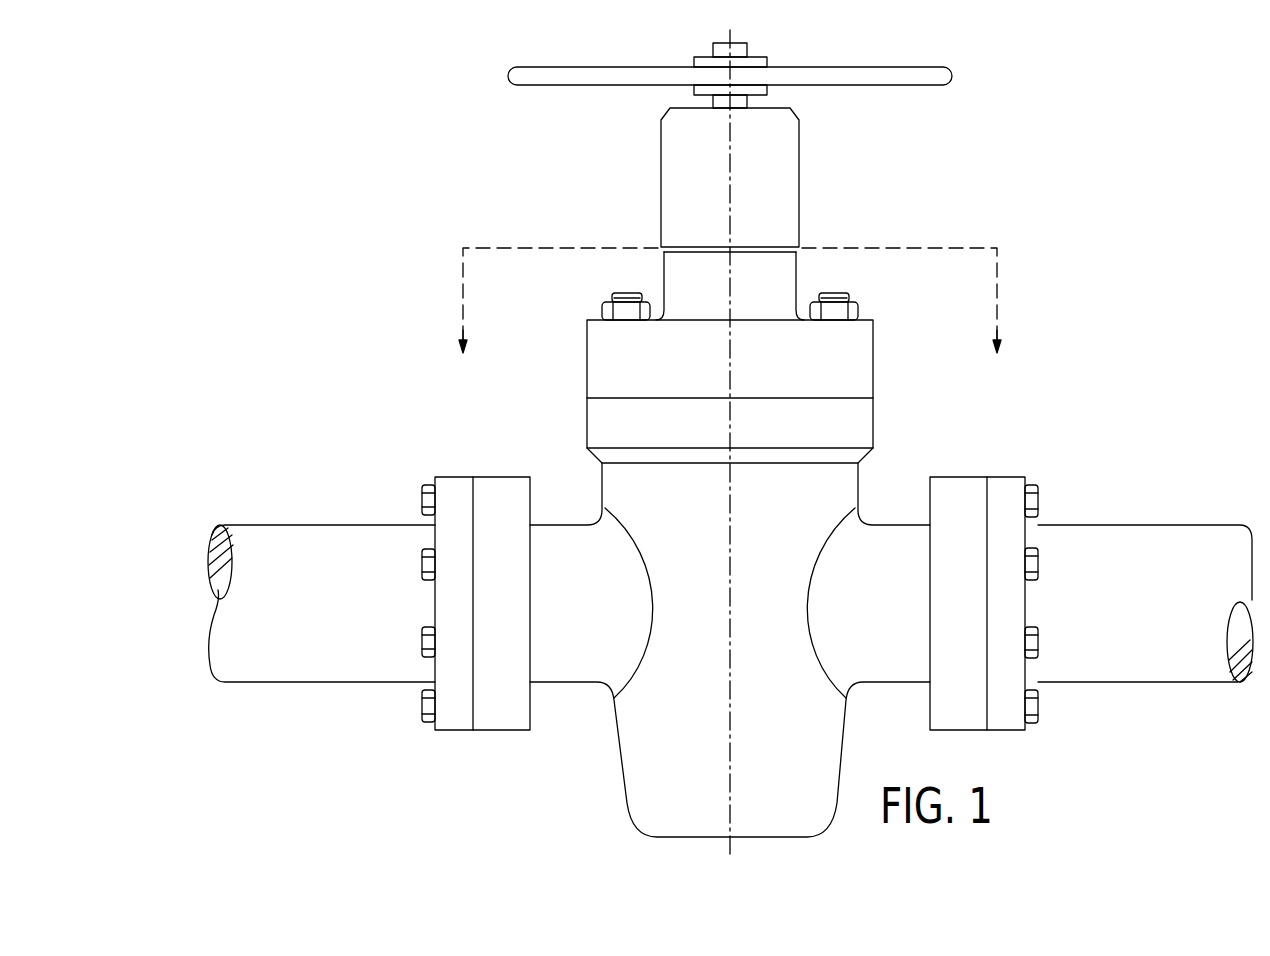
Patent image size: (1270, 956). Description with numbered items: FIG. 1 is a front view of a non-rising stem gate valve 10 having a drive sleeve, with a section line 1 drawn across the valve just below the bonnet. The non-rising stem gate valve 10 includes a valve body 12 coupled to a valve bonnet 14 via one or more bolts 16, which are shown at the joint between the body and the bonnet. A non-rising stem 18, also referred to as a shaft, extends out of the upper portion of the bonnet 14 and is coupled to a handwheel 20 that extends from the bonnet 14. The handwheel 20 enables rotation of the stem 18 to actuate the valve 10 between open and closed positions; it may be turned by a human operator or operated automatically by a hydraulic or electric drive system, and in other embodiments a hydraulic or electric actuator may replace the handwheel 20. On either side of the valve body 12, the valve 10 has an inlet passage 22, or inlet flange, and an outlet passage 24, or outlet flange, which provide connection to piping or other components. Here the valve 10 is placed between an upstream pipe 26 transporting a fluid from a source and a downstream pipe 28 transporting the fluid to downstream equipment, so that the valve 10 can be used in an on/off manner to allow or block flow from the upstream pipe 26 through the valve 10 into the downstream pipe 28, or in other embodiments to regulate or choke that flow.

The non-rising stem gate valve 10 is at (730, 444).
The valve body 12 is at (858, 487).
The valve bonnet 14 is at (797, 274).
The bolts 16 is at (600, 310).
The non-rising stem 18 is at (748, 99).
The handwheel 20 is at (925, 84).
The inlet passage 22 is at (503, 477).
The outlet passage 24 is at (962, 477).
The upstream pipe 26 is at (328, 682).
The downstream pipe 28 is at (1130, 682).
The section line 1 is at (732, 312).